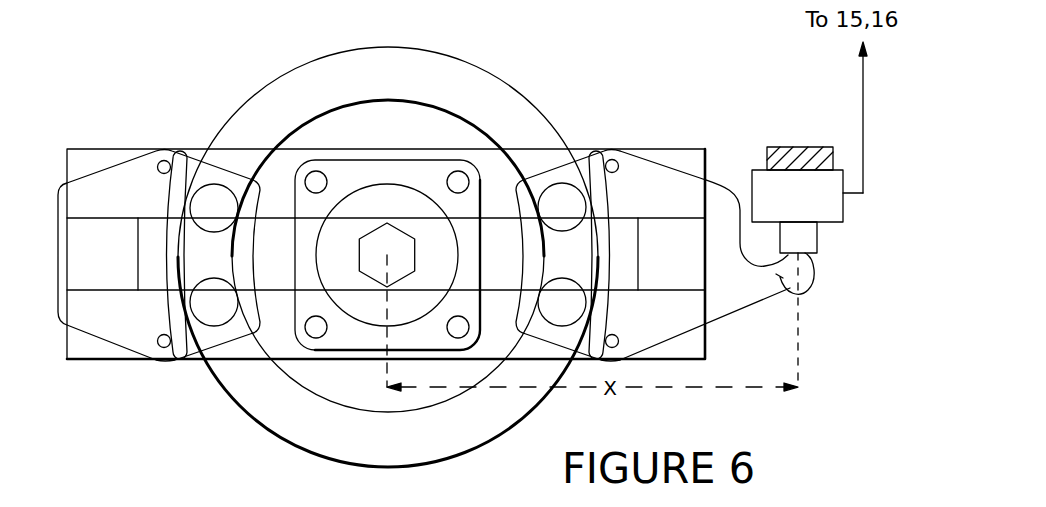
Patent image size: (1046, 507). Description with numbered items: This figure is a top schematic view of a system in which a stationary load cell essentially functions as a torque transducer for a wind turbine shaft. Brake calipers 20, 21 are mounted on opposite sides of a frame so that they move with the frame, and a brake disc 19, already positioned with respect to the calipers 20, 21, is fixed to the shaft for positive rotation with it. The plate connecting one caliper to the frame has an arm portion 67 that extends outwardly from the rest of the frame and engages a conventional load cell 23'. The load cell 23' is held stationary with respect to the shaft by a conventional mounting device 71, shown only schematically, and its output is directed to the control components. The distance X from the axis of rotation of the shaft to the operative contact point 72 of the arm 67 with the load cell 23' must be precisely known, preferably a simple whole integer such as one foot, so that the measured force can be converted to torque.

The brake disc 19 is at (296, 90).
The brake caliper 20 is at (198, 166).
The brake caliper 21 is at (591, 169).
The load cell 23' is at (785, 154).
The mounting device 71 is at (778, 147).
The contact point 72 is at (805, 243).
The arm portion 67 is at (803, 295).